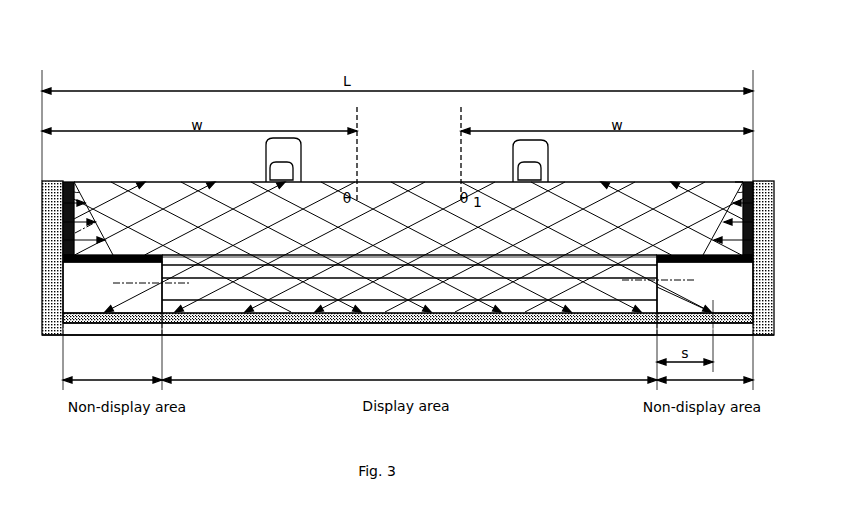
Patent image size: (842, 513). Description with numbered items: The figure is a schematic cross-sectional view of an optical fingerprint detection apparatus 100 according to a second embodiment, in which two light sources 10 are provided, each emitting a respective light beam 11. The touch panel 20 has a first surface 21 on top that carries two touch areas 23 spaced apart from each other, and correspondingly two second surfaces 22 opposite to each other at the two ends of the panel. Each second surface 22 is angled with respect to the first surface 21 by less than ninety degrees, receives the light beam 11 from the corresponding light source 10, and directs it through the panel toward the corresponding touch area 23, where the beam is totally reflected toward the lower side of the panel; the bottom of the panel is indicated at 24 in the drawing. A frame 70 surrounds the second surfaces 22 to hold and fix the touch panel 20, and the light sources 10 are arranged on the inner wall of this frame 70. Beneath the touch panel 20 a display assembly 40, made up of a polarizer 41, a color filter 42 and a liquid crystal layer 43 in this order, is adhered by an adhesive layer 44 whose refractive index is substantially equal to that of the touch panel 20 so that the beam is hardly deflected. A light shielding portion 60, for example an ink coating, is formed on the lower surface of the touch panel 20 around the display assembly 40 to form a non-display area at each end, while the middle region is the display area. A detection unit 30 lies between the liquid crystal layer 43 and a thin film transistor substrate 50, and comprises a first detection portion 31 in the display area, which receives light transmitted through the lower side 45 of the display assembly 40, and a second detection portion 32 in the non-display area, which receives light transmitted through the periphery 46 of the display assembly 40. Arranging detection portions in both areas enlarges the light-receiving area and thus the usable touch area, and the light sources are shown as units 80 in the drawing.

The optical fingerprint detection apparatus 100 is at (375, 20).
The light source 10 is at (65, 193).
The light beam 11 is at (158, 201).
The touch panel 20 is at (408, 228).
The first surface 21 is at (742, 183).
The second surface 22 is at (102, 264).
The touch area 23 is at (182, 181).
The bottom surface of light guide 24 is at (640, 255).
The detection unit 30 is at (408, 345).
The first detection portion 31 is at (634, 318).
The second detection portion 32 is at (675, 323).
The display assembly 40 is at (409, 317).
The polarizer 41 is at (236, 270).
The color filter 42 is at (230, 283).
The liquid crystal layer 43 is at (223, 295).
The adhesive layer 44 is at (232, 258).
The side of the display assembly 45 is at (553, 315).
The periphery of the display assembly 46 is at (662, 290).
The thin film transistor substrate 50 is at (395, 326).
The light shielding portion 60 is at (765, 258).
The frame 70 is at (762, 223).
The light source 80 is at (266, 157).